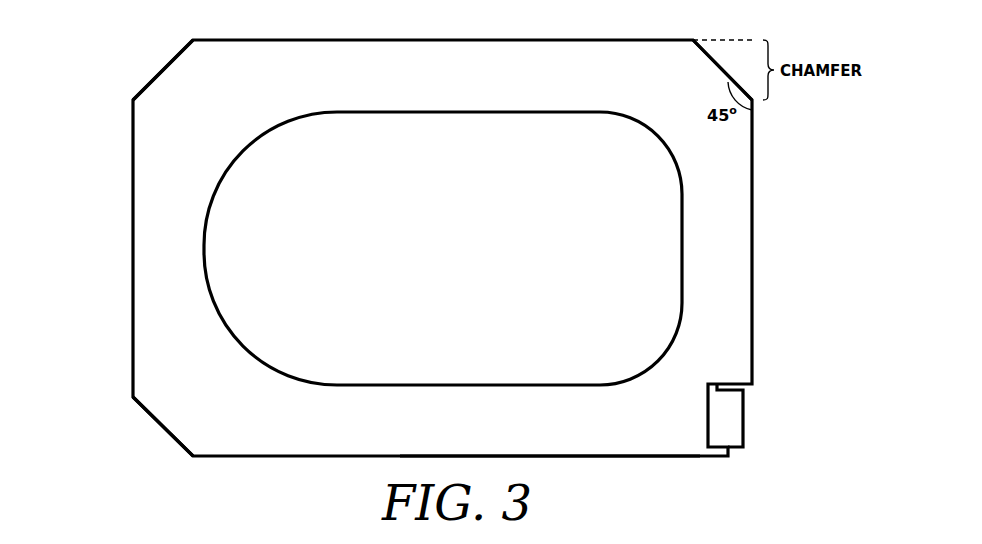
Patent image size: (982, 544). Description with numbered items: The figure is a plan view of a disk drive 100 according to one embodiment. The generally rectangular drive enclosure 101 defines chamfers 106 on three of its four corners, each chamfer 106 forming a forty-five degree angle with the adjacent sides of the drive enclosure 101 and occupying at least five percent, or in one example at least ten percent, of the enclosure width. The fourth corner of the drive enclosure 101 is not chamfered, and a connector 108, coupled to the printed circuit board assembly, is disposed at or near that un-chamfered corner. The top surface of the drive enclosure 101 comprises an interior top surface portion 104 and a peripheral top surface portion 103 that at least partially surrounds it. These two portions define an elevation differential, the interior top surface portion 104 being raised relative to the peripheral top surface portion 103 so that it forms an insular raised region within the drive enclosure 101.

The disk drive 100 is at (64, 109).
The drive enclosure 101 is at (752, 213).
The peripheral top surface portion 103 is at (580, 438).
The interior top surface portion 104 is at (421, 373).
The chamfers 106 is at (150, 80).
The connector 108 is at (743, 418).